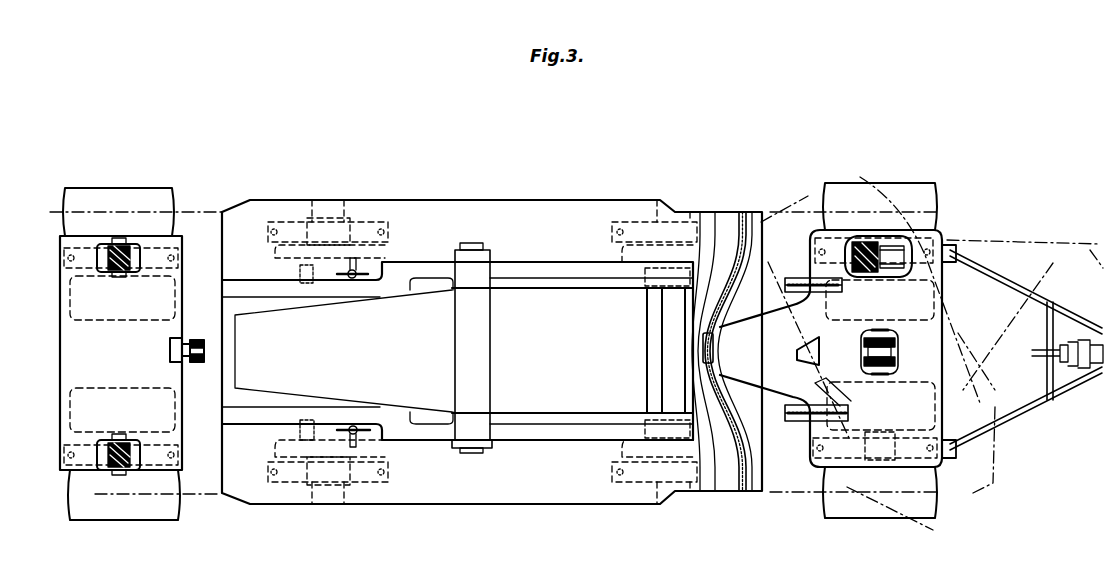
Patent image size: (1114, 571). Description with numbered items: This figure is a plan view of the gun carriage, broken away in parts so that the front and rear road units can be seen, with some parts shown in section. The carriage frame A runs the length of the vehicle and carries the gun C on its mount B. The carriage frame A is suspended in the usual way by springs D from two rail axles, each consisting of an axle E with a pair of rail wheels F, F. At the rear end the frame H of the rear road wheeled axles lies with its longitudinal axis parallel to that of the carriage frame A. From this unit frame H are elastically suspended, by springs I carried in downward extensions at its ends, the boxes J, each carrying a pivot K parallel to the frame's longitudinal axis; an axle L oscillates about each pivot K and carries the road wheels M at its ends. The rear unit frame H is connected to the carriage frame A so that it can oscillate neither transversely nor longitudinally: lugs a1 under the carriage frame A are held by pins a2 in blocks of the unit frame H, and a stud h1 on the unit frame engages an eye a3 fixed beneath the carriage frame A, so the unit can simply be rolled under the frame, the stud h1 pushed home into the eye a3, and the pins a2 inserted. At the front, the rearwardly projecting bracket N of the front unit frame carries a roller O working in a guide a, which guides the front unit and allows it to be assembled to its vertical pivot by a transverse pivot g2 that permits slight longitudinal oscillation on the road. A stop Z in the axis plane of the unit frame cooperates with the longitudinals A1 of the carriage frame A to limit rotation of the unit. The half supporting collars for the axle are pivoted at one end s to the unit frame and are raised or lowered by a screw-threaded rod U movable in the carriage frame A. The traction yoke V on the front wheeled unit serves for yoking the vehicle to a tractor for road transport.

The carriage frame A is at (468, 210).
The longitudinals A1 is at (800, 278).
The gun mount B is at (547, 432).
The gun C is at (540, 300).
The springs D is at (288, 222).
The axle E is at (335, 345).
The wheels F is at (275, 255).
The frame of the rear road wheeled axles H is at (60, 358).
The springs I is at (72, 266).
The boxes J is at (896, 270).
The pivot K is at (868, 274).
The axle L is at (880, 236).
The road wheels M is at (94, 200).
The bracket N is at (775, 388).
The roller O is at (716, 348).
The screw-threaded rod U is at (358, 272).
The traction yoke V is at (1015, 282).
The stop Z is at (800, 356).
The guide a is at (712, 305).
The lugs a1 is at (114, 268).
The pins a2 is at (120, 240).
The eye a3 is at (197, 340).
The transverse pivot g2 is at (861, 346).
The stud h1 is at (198, 364).
The pivot s is at (300, 430).